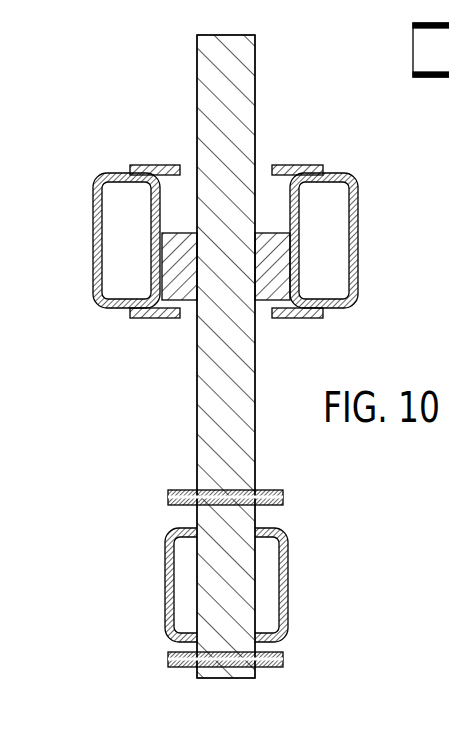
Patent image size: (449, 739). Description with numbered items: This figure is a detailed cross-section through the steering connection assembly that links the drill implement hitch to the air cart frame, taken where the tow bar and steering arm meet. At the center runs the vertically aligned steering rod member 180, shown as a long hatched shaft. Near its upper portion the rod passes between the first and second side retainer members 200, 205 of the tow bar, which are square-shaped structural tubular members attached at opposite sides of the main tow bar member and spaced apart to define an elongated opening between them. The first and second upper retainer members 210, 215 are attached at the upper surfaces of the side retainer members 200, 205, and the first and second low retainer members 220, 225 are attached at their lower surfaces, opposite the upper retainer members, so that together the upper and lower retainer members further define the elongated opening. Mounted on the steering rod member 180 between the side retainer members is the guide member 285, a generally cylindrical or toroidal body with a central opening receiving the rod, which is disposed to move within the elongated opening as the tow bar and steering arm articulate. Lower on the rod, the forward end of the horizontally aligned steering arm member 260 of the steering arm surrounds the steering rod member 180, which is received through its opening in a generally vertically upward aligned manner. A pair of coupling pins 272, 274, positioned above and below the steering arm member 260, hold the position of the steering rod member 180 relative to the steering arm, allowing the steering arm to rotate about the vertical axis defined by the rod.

The steering rod member 180 is at (256, 71).
The first side retainer member 200 is at (93, 200).
The second side retainer member 205 is at (359, 230).
The first upper retainer member 210 is at (144, 165).
The second upper retainer member 215 is at (296, 168).
The first low retainer member 220 is at (160, 318).
The second low retainer member 225 is at (314, 318).
The guide member 285 is at (262, 301).
The coupling pin 272 is at (266, 489).
The coupling pin 274 is at (275, 668).
The horizontally aligned steering arm member 260 is at (288, 580).